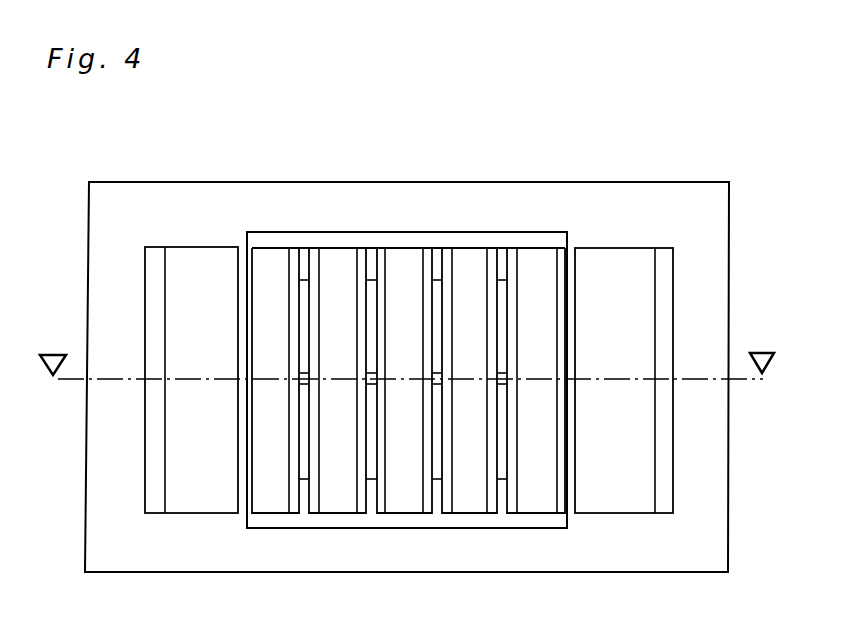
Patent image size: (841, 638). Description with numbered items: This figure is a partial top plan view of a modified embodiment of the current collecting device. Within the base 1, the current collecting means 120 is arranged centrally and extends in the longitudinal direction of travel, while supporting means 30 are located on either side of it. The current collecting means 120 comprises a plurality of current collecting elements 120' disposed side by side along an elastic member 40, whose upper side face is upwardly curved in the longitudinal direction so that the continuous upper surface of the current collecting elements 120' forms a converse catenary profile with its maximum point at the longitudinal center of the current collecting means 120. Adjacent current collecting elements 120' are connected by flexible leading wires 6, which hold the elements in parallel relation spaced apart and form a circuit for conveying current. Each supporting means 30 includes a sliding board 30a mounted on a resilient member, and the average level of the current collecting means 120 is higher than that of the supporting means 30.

The base plate 1 is at (165, 550).
The supporting means 30 is at (192, 159).
The sliding board 30a is at (178, 345).
The current collecting means 120 is at (443, 378).
The current collecting elements 120' is at (408, 355).
The elastic member 40 is at (554, 242).
The flexible leading wires 6 is at (372, 420).